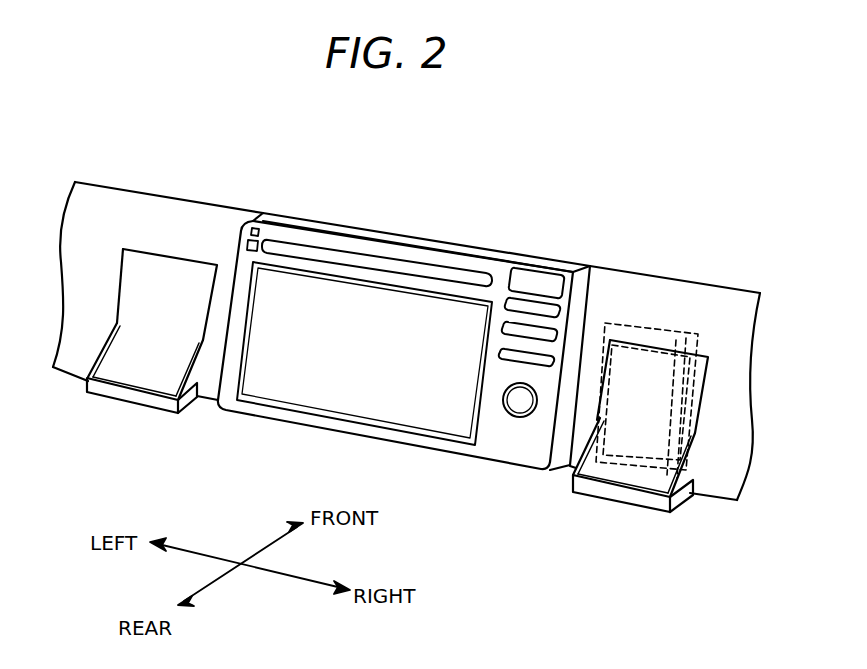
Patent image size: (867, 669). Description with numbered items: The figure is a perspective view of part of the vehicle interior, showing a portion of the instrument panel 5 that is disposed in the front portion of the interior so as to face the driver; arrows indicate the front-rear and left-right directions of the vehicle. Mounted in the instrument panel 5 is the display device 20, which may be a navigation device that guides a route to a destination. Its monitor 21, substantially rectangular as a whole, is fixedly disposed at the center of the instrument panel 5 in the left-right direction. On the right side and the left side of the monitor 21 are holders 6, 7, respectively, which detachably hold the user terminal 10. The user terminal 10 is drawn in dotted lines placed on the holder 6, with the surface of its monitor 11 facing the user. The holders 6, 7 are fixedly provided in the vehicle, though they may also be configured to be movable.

The instrument panel 5 is at (713, 484).
The holder 6 is at (658, 510).
The holder 7 is at (118, 402).
The user terminal 10 is at (657, 325).
The monitor 11 is at (628, 432).
The display device 20 is at (404, 332).
The monitor 21 is at (308, 387).